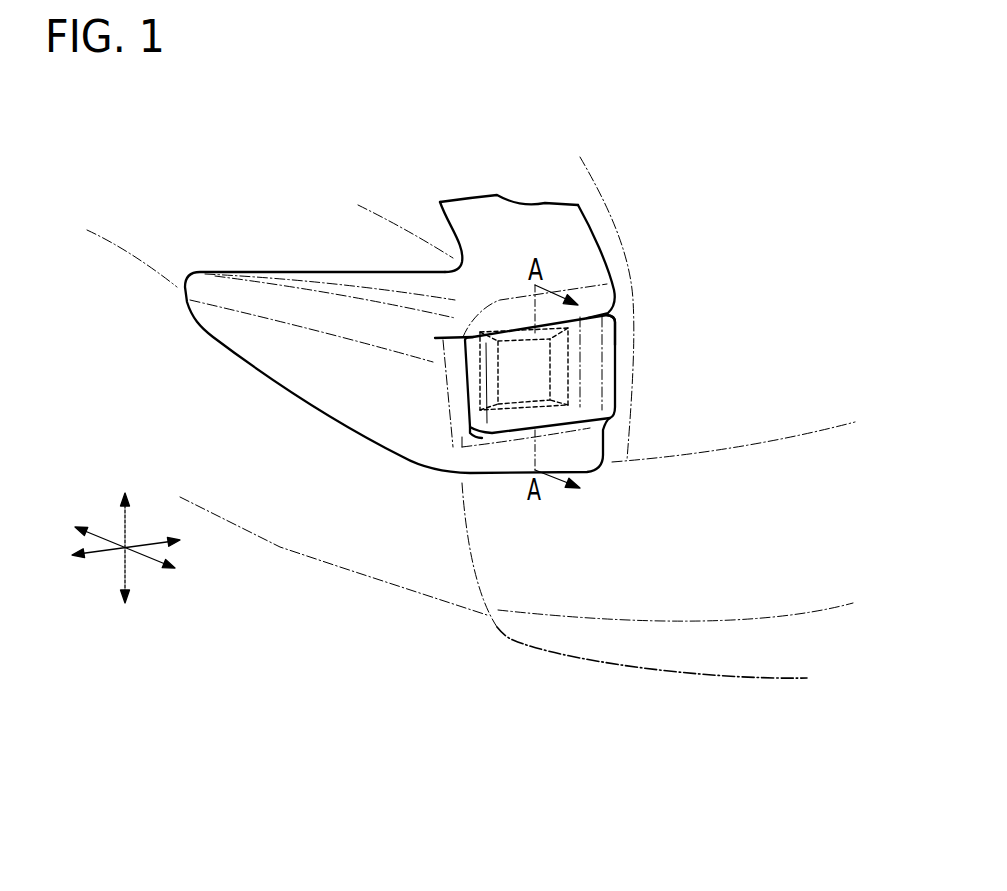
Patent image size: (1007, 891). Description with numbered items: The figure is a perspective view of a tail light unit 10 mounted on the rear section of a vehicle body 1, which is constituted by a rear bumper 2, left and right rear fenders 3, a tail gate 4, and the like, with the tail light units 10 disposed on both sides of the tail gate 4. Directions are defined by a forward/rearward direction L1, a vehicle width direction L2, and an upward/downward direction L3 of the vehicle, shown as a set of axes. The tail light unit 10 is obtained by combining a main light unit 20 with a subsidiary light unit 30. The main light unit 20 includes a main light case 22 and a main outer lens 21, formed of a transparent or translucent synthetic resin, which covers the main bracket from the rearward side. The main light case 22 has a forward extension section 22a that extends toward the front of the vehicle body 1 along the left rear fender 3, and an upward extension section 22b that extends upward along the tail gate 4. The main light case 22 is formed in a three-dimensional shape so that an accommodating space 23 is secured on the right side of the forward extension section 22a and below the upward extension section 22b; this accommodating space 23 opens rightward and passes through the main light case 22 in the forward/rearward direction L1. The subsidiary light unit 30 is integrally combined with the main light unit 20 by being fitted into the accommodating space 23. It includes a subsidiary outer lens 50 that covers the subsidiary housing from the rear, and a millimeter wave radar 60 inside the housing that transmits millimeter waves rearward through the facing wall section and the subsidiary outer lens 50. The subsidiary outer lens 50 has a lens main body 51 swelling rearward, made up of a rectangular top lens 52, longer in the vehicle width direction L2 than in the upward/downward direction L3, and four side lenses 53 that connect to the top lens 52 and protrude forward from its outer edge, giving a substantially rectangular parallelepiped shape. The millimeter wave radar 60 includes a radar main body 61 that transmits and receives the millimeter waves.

The vehicle body 1 is at (514, 652).
The rear bumper 2 is at (718, 660).
The rear fender 3 is at (352, 548).
The tail gate 4 is at (637, 172).
The tail light unit 10 is at (757, 175).
The main light unit 20 is at (605, 239).
The main outer lens 21 is at (410, 425).
The main light case 22 is at (404, 474).
The forward extension section 22a is at (213, 322).
The upward extension section 22b is at (490, 218).
The accommodating space 23 is at (603, 337).
The subsidiary light unit 30 is at (624, 313).
The subsidiary outer lens 50 is at (672, 363).
The lens main body 51 is at (616, 379).
The top lens 52 is at (543, 385).
The side lens 53 is at (592, 315).
The millimeter wave radar 60 is at (573, 483).
The radar main body 61 is at (551, 424).
The forward/rearward direction L1 is at (138, 557).
The vehicle width direction L2 is at (105, 553).
The upward/downward direction L3 is at (120, 528).